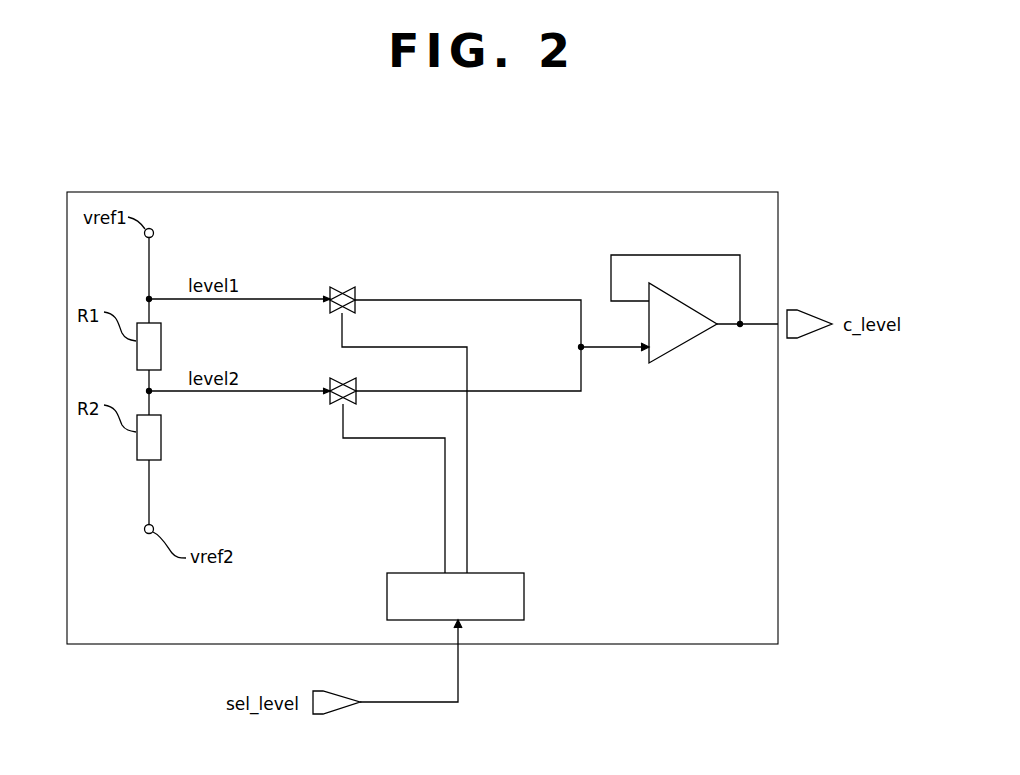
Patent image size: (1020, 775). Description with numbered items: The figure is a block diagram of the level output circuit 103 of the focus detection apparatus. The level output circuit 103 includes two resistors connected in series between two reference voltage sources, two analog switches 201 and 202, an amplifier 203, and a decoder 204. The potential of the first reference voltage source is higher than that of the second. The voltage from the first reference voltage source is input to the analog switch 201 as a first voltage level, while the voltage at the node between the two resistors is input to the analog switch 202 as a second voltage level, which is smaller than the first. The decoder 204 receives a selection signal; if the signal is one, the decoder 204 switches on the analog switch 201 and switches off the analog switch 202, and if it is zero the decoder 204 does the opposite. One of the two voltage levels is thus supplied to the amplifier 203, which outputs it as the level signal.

The level output circuit 103 is at (193, 192).
The analog switch 201 is at (353, 291).
The analog switch 202 is at (334, 403).
The amplifier 203 is at (678, 348).
The decoder 204 is at (498, 573).